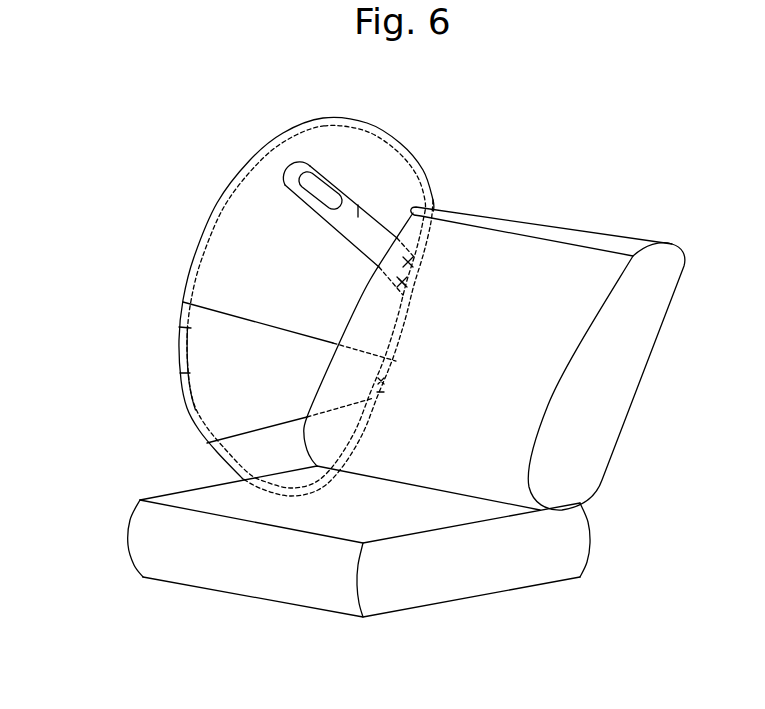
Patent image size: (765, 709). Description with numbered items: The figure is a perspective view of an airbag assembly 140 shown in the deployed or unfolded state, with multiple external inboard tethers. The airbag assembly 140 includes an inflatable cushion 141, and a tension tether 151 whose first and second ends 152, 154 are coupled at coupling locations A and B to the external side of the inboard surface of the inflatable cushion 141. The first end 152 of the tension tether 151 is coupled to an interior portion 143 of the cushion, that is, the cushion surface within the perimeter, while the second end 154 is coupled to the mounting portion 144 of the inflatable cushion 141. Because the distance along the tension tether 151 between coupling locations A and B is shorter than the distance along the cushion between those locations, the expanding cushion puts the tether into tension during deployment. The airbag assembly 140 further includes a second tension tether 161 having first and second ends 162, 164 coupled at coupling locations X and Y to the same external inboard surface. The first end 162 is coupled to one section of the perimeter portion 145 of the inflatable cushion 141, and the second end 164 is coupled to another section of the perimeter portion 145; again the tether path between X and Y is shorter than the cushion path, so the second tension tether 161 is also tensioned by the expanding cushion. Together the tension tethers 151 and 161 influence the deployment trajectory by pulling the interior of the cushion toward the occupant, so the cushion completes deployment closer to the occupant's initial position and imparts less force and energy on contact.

The airbag assembly 140 is at (132, 255).
The inflatable cushion 141 is at (240, 237).
The interior portion 143 is at (316, 183).
The mounting portion 144 is at (409, 262).
The perimeter portion 145 is at (179, 327).
The tension tether 151 is at (358, 205).
The first end 152 is at (290, 177).
The second end 154 is at (404, 282).
The second tension tether 161 is at (276, 391).
The first end 162 is at (188, 407).
The second end 164 is at (381, 392).
The coupling location A is at (404, 283).
The coupling location B is at (308, 174).
The coupling location X is at (385, 382).
The coupling location Y is at (180, 373).